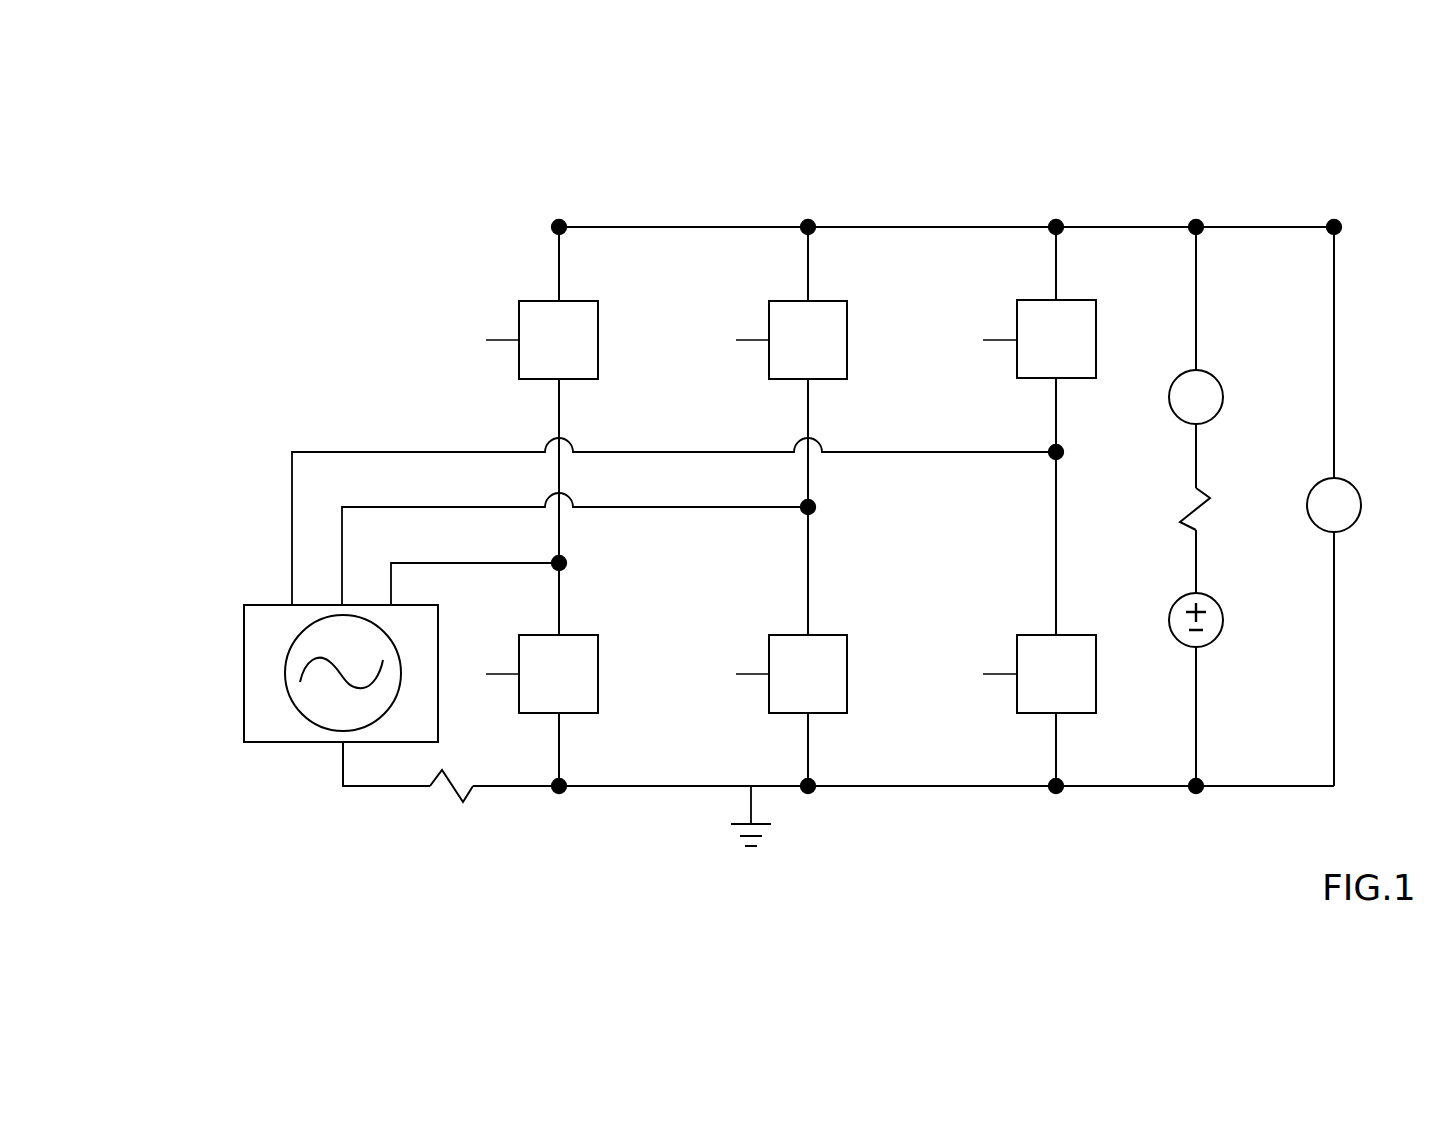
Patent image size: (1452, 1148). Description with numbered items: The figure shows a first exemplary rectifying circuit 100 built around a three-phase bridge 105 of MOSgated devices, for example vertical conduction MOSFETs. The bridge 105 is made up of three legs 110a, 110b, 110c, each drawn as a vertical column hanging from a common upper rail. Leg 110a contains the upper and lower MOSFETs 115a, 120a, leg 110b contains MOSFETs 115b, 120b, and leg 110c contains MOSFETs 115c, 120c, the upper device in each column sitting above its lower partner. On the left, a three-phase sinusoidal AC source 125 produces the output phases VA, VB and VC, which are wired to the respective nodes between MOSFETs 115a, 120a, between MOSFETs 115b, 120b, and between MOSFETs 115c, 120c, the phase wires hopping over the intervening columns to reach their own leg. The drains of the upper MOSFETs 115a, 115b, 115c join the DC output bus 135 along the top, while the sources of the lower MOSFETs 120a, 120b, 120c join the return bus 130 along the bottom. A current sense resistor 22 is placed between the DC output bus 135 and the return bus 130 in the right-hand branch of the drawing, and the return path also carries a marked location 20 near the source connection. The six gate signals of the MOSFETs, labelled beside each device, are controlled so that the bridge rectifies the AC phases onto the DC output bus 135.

The rectifying circuit 100 is at (294, 255).
The 3-phase bridge 105 is at (1053, 203).
The leg 110a is at (640, 331).
The leg 110b is at (890, 331).
The leg 110c is at (1138, 328).
The MOSFET 115a is at (559, 340).
The MOSFET 115b is at (809, 340).
The MOSFET 115c is at (1056, 339).
The MOSFET 120a is at (559, 674).
The MOSFET 120b is at (809, 674).
The MOSFET 120c is at (1056, 674).
The 3-phase sinusoidal AC source 125 is at (270, 726).
The return bus 130 is at (932, 786).
The DC output bus 135 is at (1334, 222).
The fault / break in return line 20 is at (440, 790).
The current sense resistor 22 is at (1229, 485).